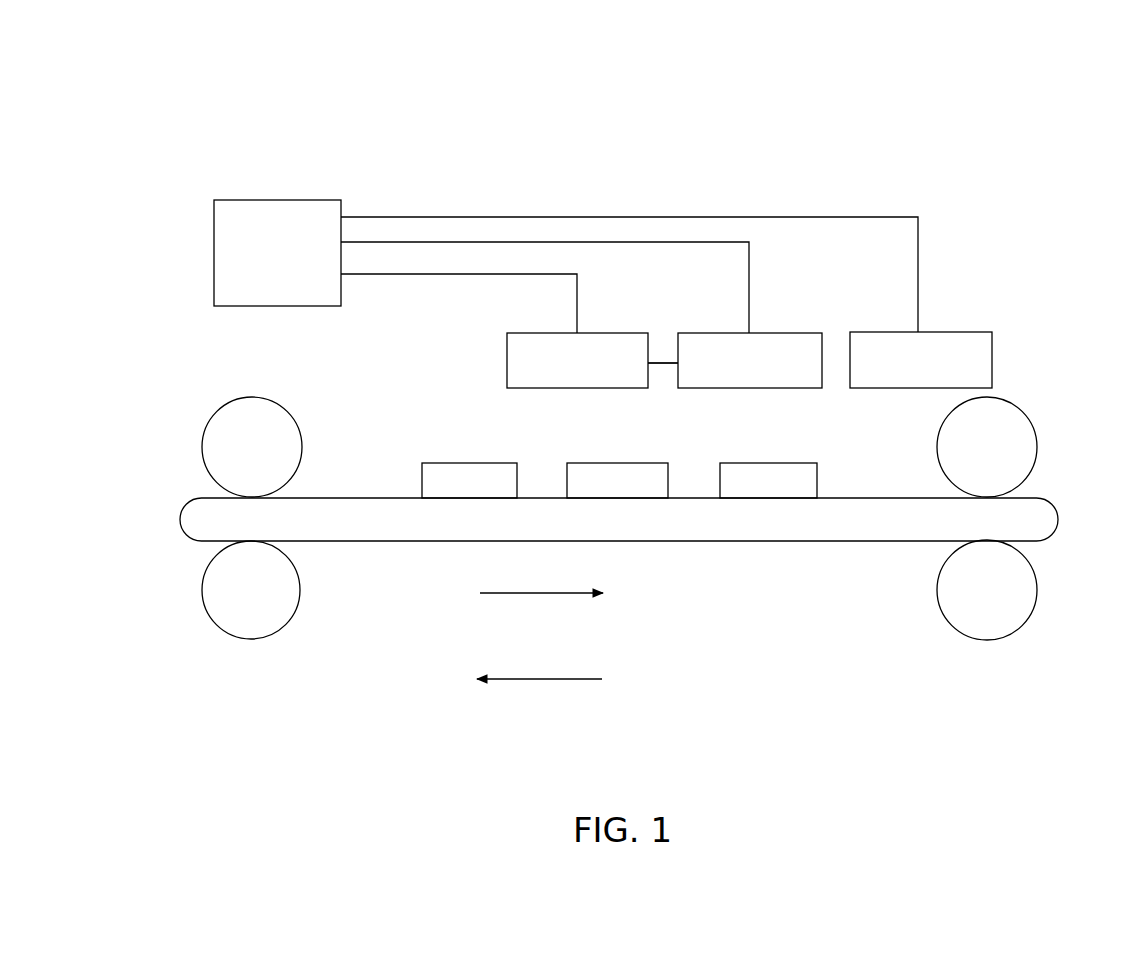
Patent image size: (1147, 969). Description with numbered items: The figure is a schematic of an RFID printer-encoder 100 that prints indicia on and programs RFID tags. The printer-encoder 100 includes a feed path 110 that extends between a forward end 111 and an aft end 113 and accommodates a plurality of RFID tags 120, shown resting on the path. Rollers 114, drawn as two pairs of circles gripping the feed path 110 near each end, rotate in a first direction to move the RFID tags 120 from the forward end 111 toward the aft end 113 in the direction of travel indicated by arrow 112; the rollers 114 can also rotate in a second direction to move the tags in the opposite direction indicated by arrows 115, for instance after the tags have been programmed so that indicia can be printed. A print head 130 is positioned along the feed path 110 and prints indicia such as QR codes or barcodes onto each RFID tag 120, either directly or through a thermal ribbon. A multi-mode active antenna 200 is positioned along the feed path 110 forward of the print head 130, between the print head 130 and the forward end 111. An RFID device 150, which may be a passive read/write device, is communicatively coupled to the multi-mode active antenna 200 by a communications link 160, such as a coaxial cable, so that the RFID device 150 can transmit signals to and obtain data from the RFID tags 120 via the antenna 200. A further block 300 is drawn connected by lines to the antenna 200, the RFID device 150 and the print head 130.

The RFID printer-encoder 100 is at (929, 150).
The controller 300 is at (277, 253).
The multi-mode active antenna 200 is at (577, 360).
The RFID device 150 is at (750, 360).
The print head 130 is at (921, 360).
The communications link 160 is at (663, 362).
The feed path 110 is at (784, 543).
The forward end 111 is at (181, 518).
The aft end 113 is at (1058, 521).
The rollers 114 is at (246, 396).
The RFID tags 120 is at (619, 480).
The arrow indicating direction of travel 112 is at (527, 595).
The arrows indicating different direction of travel 115 is at (558, 680).